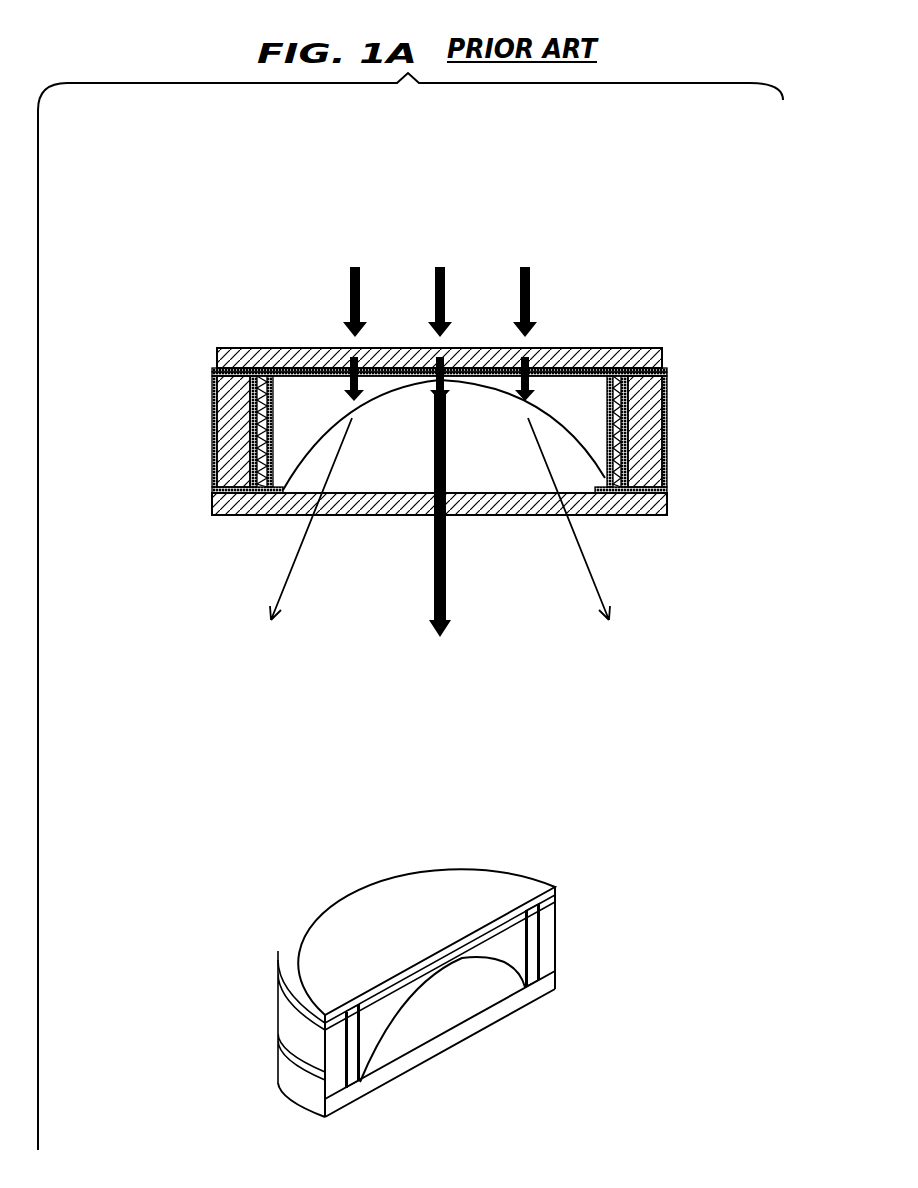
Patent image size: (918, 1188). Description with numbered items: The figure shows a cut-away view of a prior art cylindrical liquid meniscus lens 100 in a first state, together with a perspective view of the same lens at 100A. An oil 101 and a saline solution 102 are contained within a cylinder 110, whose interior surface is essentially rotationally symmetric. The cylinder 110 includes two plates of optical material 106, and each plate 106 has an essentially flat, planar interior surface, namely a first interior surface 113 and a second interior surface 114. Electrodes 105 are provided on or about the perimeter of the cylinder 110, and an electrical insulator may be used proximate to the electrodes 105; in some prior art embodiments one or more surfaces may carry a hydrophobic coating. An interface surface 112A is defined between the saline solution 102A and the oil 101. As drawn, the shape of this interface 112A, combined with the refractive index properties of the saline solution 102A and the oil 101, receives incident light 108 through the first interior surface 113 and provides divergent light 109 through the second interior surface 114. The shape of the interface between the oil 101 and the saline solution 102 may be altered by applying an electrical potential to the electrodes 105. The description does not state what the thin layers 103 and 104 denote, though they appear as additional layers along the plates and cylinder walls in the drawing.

The prior art lens 100 is at (707, 346).
The perspective view of the prior art lens 100A is at (243, 1027).
The oil 101 is at (573, 396).
The saline solution 102 is at (567, 468).
The saline solution 102A is at (430, 1030).
The upper thin layer 103 is at (300, 369).
The inner wall spacer 104 is at (261, 377).
The electrodes 105 is at (212, 415).
The plates of optical material 106 is at (325, 348).
The incident light 108 is at (412, 258).
The divergent light 109 is at (582, 558).
The cylinder 110 is at (648, 442).
The interface surface 112A is at (485, 348).
The first interior surface 113 is at (337, 375).
The second interior surface 114 is at (270, 468).